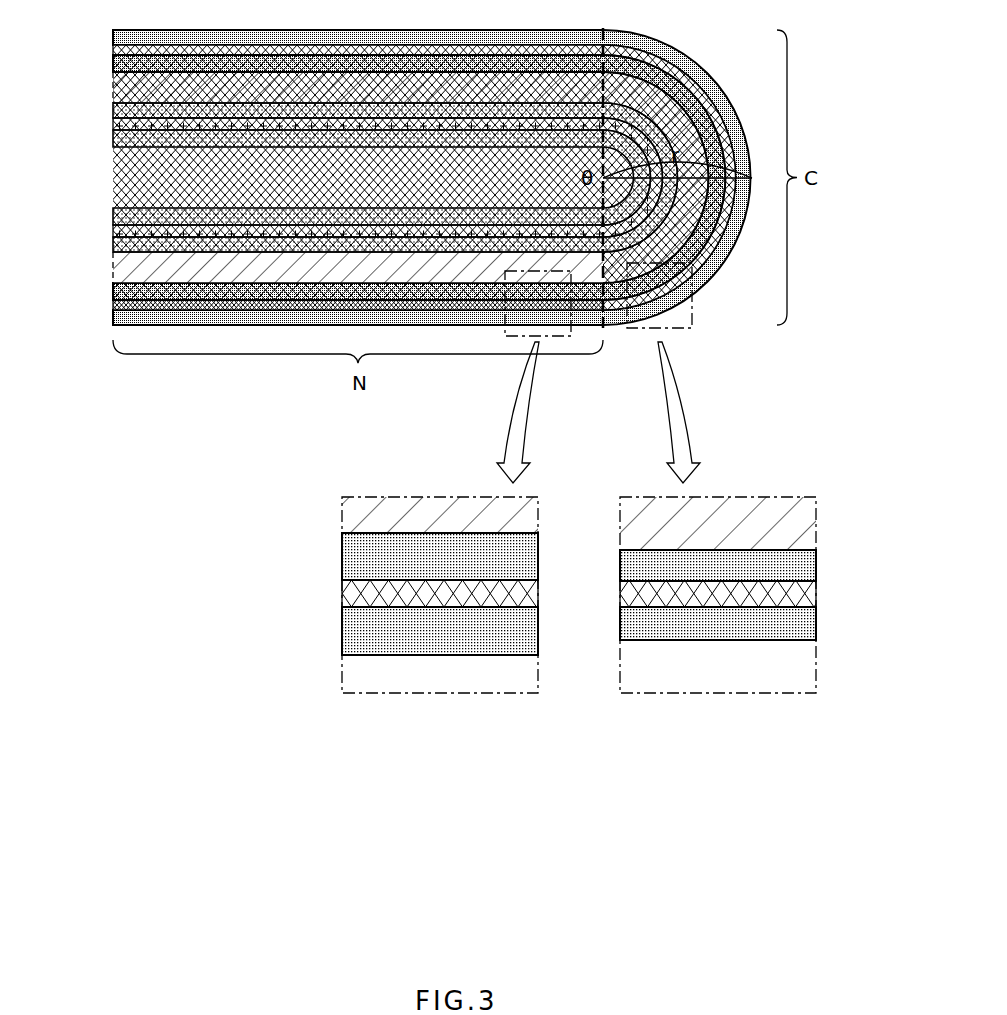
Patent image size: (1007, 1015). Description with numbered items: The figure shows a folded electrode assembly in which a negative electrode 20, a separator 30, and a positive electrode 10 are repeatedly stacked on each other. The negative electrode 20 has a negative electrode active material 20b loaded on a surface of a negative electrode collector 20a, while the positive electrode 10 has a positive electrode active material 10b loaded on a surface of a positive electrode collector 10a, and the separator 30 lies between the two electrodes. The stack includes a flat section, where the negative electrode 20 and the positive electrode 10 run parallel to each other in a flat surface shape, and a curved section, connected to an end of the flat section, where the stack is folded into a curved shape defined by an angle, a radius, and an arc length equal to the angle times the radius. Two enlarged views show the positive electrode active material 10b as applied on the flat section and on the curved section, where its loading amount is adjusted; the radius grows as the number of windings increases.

The positive electrode 10 is at (453, 317).
The positive electrode collector 10a is at (113, 53).
The positive electrode active material 10b is at (113, 33).
The negative electrode 20 is at (346, 176).
The negative electrode collector 20a is at (113, 125).
The negative electrode active material 20b is at (113, 107).
The separator 30 is at (121, 265).